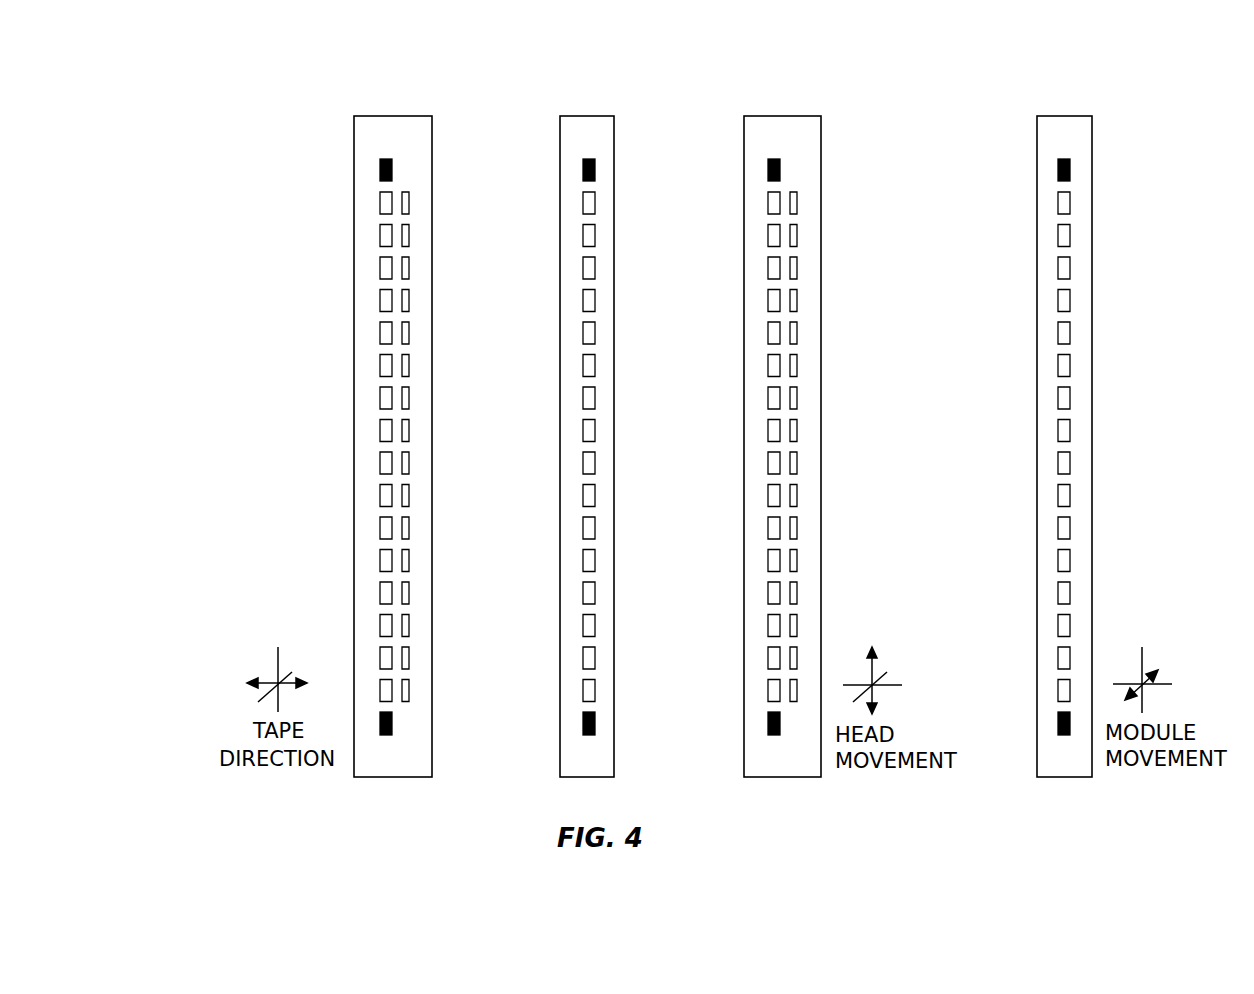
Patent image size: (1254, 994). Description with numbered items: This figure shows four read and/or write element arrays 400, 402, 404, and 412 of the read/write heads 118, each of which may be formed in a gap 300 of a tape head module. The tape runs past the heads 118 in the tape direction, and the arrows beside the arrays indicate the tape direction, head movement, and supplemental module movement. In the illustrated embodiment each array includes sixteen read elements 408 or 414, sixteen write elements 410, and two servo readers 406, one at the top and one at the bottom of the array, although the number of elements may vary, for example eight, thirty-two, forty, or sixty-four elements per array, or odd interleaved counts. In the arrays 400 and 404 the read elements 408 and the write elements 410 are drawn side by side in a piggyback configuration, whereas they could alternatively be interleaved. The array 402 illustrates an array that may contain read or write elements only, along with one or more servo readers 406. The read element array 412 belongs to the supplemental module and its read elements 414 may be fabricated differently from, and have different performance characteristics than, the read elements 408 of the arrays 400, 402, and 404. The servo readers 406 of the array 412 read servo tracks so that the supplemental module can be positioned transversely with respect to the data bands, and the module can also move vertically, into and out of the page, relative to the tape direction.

The read/write heads 118 is at (278, 387).
The gaps 300 is at (354, 125).
The read and/or write element array 400 is at (399, 94).
The read and/or write element array 402 is at (591, 94).
The read and/or write element array 404 is at (789, 94).
The read element array 412 is at (1069, 94).
The servo readers 406 is at (380, 168).
The read elements 408 is at (380, 200).
The write elements 410 is at (409, 200).
The read elements 414 is at (1070, 198).